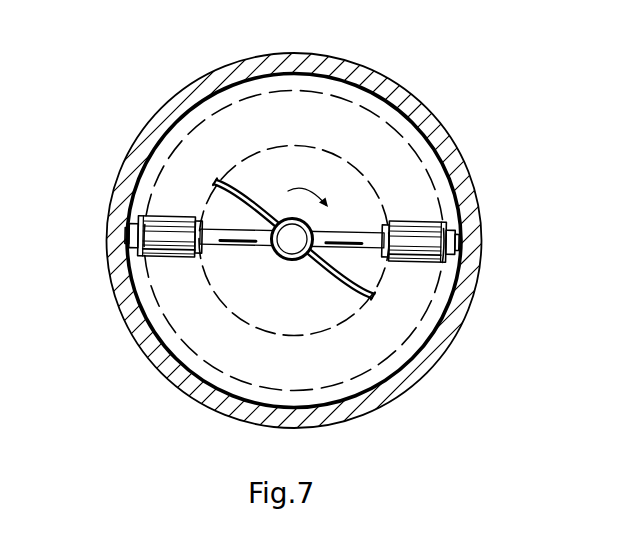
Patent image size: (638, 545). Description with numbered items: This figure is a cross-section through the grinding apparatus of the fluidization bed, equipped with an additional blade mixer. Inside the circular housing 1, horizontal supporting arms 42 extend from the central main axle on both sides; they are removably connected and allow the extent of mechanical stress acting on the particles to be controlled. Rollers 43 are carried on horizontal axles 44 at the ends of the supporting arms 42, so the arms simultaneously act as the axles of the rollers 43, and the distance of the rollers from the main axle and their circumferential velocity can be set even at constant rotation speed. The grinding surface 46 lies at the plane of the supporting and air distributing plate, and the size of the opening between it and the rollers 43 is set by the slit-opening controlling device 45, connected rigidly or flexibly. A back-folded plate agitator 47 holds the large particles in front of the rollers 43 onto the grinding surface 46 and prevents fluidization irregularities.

The housing 1 is at (203, 83).
The supporting arms 42 is at (343, 237).
The rollers 43 is at (148, 214).
The horizontal axles 44 is at (126, 237).
The slit-opening controlling device 45 is at (293, 252).
The grinding surface 46 is at (387, 130).
The flexible strip 47 is at (215, 182).